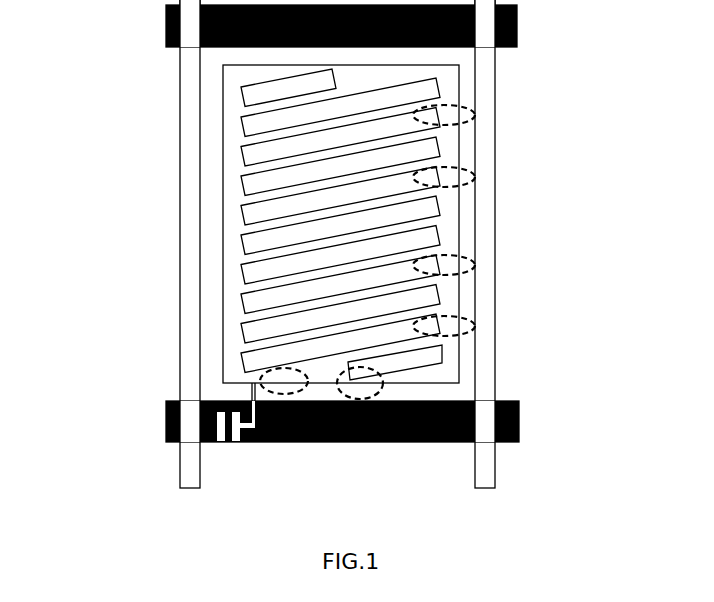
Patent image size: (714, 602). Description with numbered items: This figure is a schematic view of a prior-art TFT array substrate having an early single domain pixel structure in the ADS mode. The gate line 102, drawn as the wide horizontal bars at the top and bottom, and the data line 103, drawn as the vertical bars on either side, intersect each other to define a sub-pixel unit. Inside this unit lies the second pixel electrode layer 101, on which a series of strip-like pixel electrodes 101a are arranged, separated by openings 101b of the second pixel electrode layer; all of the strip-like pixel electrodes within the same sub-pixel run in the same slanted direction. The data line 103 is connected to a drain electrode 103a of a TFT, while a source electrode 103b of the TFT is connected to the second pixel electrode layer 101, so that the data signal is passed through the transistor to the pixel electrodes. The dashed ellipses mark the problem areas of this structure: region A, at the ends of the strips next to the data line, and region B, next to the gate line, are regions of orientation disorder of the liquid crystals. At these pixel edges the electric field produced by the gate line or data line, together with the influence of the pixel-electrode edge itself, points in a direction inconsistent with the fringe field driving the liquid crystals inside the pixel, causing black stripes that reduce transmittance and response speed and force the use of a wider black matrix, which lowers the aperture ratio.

The second pixel electrode layer 101 is at (241, 120).
The strip-like pixel electrodes 101a is at (248, 174).
The openings of the second pixel electrode layer 101b is at (260, 213).
The gate line 102 is at (166, 32).
The data line 103 is at (193, 290).
The drain electrode 103a is at (213, 427).
The source electrode 103b is at (225, 442).
The region of orientation disorder near data lines A is at (472, 115).
The region of orientation disorder near gate lines B is at (332, 443).